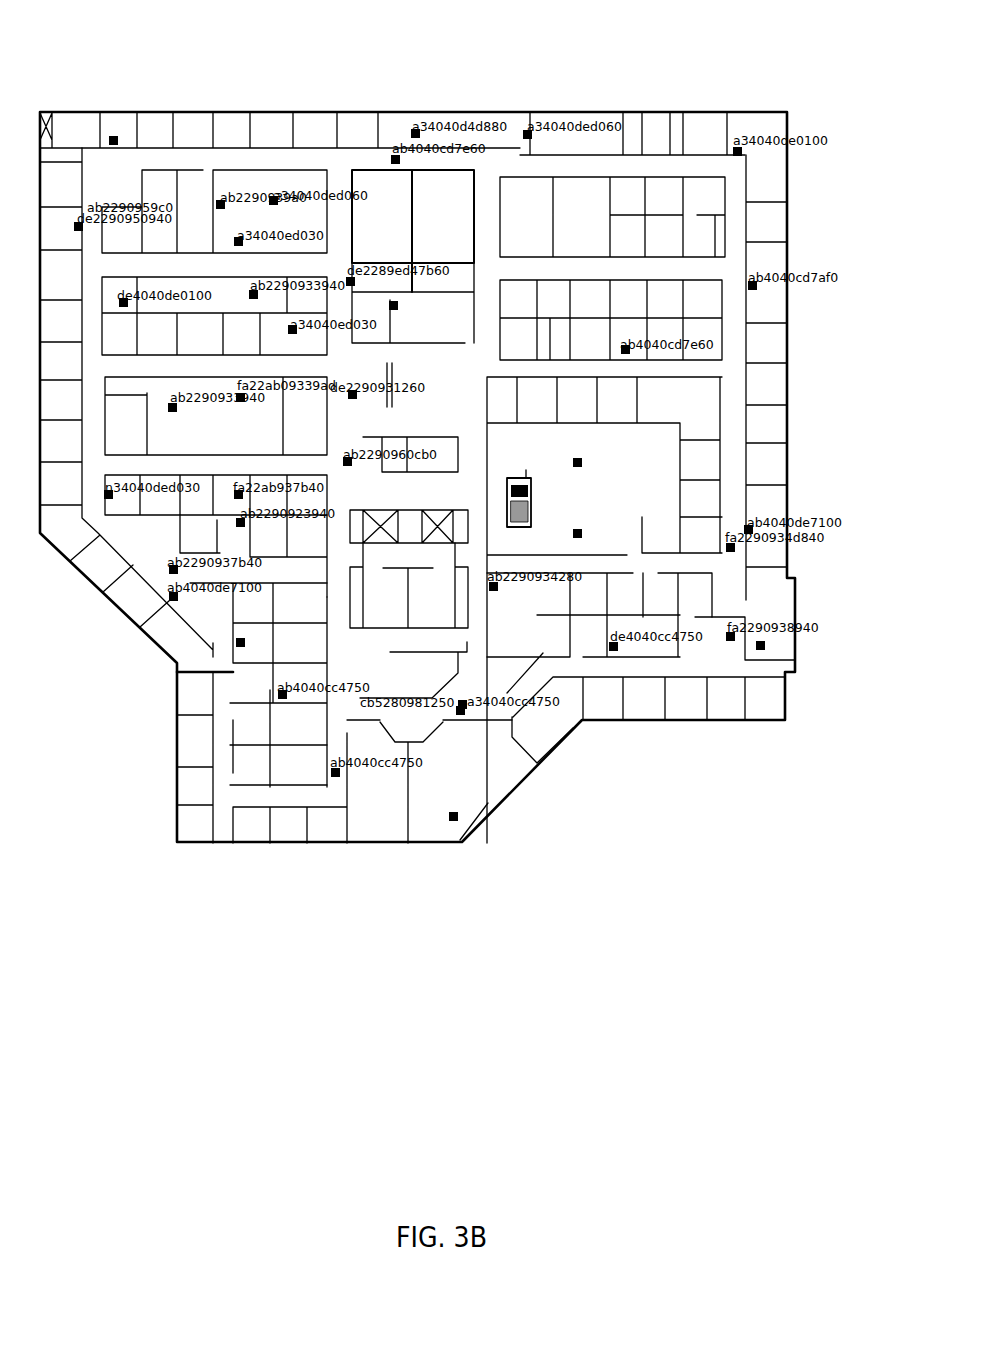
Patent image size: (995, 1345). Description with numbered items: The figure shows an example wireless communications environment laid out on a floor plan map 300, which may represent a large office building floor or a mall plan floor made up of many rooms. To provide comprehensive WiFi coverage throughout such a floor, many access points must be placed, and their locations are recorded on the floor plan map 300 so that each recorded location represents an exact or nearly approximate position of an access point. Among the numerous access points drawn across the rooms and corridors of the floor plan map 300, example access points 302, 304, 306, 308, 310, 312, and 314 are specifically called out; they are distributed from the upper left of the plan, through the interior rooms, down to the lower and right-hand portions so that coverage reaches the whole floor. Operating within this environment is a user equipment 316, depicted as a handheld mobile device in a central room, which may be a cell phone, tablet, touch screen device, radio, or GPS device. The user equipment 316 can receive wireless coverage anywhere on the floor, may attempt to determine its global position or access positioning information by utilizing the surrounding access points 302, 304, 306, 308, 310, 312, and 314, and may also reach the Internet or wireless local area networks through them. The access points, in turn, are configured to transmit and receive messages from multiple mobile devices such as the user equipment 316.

The floor plan map 300 is at (45, 93).
The access point 302 is at (117, 112).
The access point 304 is at (405, 306).
The access point 306 is at (243, 650).
The access point 308 is at (463, 820).
The access point 310 is at (768, 642).
The access point 312 is at (583, 440).
The access point 314 is at (577, 550).
The user equipment 316 is at (547, 510).